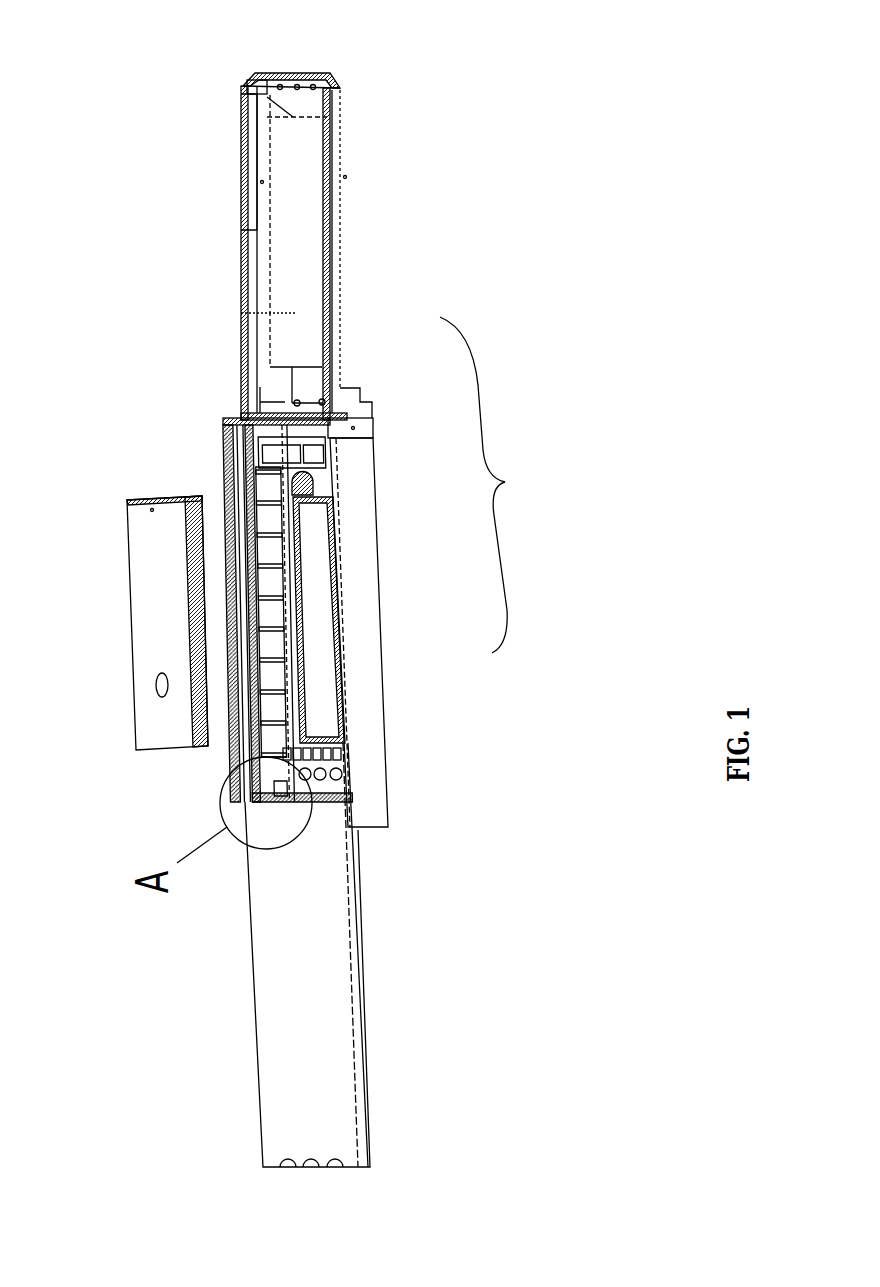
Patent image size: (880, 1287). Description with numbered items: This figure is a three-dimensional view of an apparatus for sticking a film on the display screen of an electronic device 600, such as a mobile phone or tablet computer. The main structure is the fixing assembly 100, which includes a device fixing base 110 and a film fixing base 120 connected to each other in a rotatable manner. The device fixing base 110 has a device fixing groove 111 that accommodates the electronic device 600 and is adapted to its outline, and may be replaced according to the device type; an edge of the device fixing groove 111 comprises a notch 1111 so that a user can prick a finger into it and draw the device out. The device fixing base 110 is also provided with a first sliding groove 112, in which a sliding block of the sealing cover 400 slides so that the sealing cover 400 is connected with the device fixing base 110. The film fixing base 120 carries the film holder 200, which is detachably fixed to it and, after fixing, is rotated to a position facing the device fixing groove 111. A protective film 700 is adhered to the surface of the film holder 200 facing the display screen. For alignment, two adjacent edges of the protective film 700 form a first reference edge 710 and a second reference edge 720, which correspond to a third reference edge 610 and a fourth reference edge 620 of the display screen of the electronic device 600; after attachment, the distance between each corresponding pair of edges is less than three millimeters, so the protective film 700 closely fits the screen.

The fixing assembly 100 is at (500, 485).
The device fixing base 110 is at (370, 617).
The device fixing groove 111 is at (297, 553).
The notch 1111 is at (312, 503).
The first sliding groove 112 is at (262, 492).
The film fixing base 120 is at (343, 385).
The film holder 200 is at (293, 117).
The sealing cover 400 is at (325, 1030).
The electronic device 600 is at (147, 607).
The third reference edge 610 is at (152, 750).
The fourth reference edge 620 is at (150, 690).
The protective film 700 is at (240, 313).
The first reference edge 710 is at (256, 84).
The second reference edge 720 is at (241, 230).